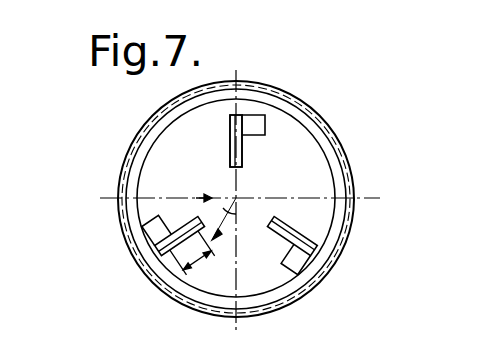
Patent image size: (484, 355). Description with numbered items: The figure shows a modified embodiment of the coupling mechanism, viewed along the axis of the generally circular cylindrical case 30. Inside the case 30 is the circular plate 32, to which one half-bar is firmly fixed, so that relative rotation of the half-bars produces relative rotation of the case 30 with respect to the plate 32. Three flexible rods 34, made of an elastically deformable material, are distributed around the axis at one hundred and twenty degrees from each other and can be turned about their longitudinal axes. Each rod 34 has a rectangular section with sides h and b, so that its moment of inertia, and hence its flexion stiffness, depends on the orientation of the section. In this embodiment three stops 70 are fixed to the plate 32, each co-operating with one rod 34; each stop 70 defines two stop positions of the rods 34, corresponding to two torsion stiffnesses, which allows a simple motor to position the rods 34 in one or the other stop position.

The case 30 is at (334, 130).
The circular plate 32 is at (141, 156).
The flexible rod 34 is at (230, 137).
The stop 70 is at (253, 115).
The side b of rectangular section b is at (224, 204).
The side h of rectangular section h is at (183, 293).